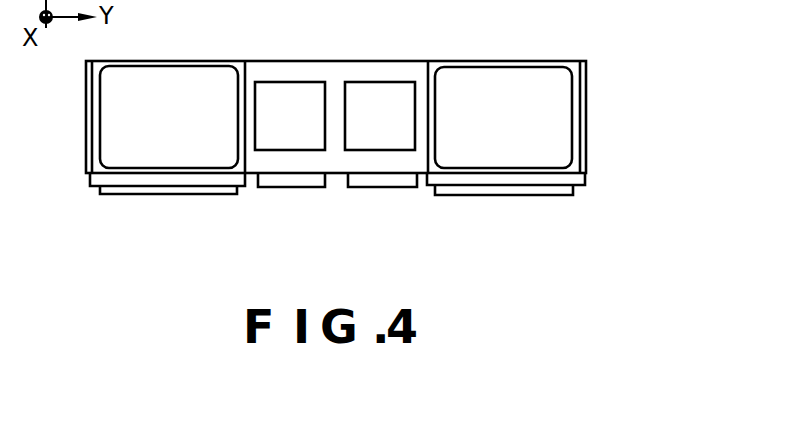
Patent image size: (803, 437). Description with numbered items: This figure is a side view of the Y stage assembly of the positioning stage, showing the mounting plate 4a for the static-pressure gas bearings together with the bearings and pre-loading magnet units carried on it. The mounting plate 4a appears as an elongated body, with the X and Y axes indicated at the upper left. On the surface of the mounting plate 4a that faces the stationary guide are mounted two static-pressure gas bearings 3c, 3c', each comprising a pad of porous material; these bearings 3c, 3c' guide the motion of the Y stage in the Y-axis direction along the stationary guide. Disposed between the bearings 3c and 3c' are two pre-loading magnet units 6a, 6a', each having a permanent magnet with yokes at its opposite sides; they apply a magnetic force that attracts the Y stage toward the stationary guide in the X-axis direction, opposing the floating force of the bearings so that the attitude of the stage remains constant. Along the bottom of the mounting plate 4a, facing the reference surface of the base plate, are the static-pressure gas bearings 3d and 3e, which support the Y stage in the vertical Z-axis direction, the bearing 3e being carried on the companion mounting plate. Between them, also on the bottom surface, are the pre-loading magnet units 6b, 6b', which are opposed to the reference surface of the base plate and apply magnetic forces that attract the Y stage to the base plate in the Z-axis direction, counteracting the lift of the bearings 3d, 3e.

The mounting plate 4a is at (398, 68).
The static-pressure gas bearing 3c is at (169, 85).
The static-pressure gas bearing 3c' is at (503, 85).
The static-pressure gas bearing 3d is at (167, 194).
The static-pressure gas bearing 3e is at (500, 195).
The pre-loading magnet unit 6a is at (290, 76).
The pre-loading magnet unit 6a' is at (370, 76).
The pre-loading magnet unit 6b is at (291, 216).
The pre-loading magnet unit 6b' is at (382, 216).